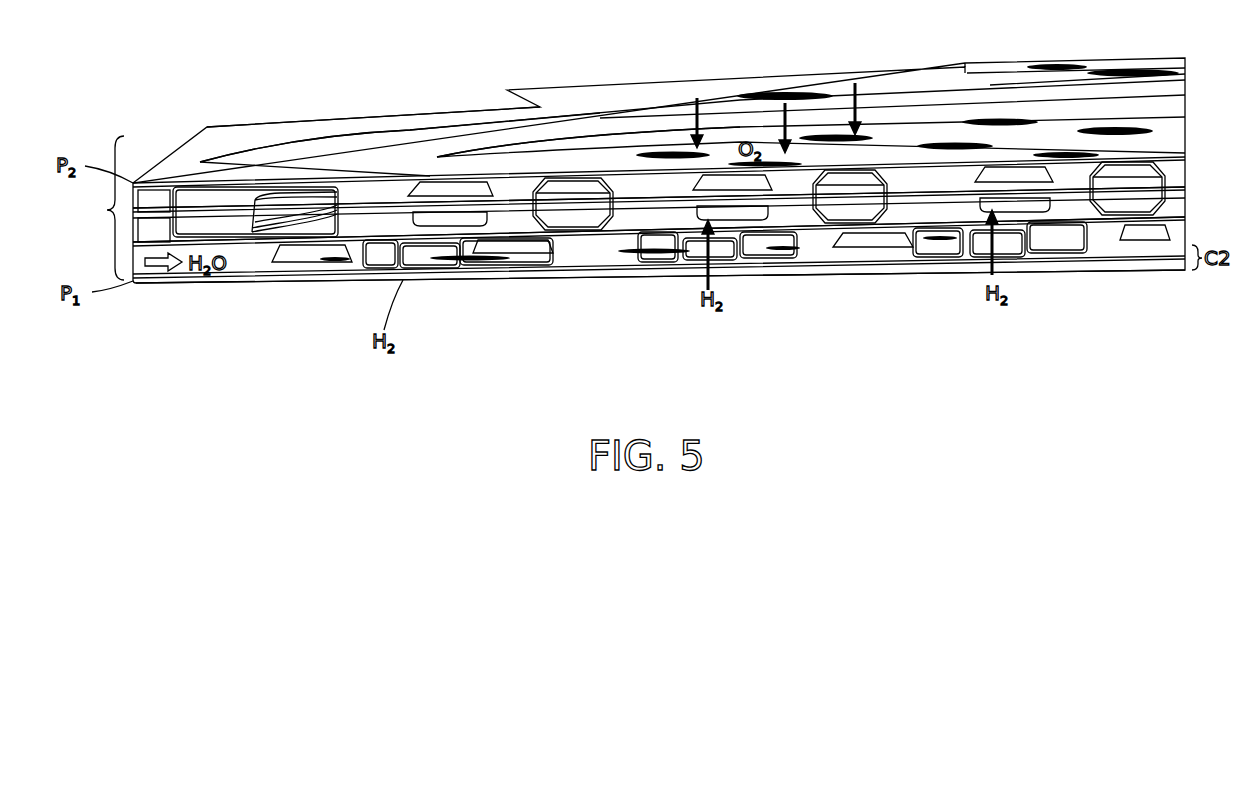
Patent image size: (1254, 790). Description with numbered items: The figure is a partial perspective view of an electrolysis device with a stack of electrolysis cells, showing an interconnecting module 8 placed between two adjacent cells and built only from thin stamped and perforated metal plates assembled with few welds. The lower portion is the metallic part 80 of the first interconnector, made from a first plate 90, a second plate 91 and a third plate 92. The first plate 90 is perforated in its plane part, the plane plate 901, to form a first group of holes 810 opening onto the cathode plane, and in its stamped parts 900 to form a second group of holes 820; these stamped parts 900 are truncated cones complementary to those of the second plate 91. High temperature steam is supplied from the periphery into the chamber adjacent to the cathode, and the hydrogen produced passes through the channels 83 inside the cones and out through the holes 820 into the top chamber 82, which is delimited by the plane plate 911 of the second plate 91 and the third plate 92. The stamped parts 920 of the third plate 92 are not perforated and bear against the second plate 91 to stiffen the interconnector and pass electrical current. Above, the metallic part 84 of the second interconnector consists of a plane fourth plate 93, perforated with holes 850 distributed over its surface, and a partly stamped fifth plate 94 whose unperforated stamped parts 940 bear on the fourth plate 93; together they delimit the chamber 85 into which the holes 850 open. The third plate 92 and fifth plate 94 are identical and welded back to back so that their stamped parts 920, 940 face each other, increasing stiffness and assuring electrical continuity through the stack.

The interconnecting module 8 is at (95, 212).
The metallic part 80 is at (1185, 188).
The top chamber 82 is at (608, 220).
The channels 83 is at (1037, 247).
The metallic part 84 is at (1185, 157).
The chamber 85 is at (686, 196).
The first plate 90 is at (256, 285).
The second plate 91 is at (380, 247).
The third plate 92 is at (213, 237).
The fourth plate 93 is at (281, 118).
The fifth plate 94 is at (312, 195).
The first group of holes 810 is at (510, 265).
The second group of holes 820 is at (437, 257).
The holes 850 is at (663, 154).
The stamped parts 900 is at (775, 255).
The plane plate 901 is at (655, 258).
The plane plate 911 is at (406, 160).
The stamped parts 920 is at (853, 208).
The stamped parts 940 is at (556, 155).